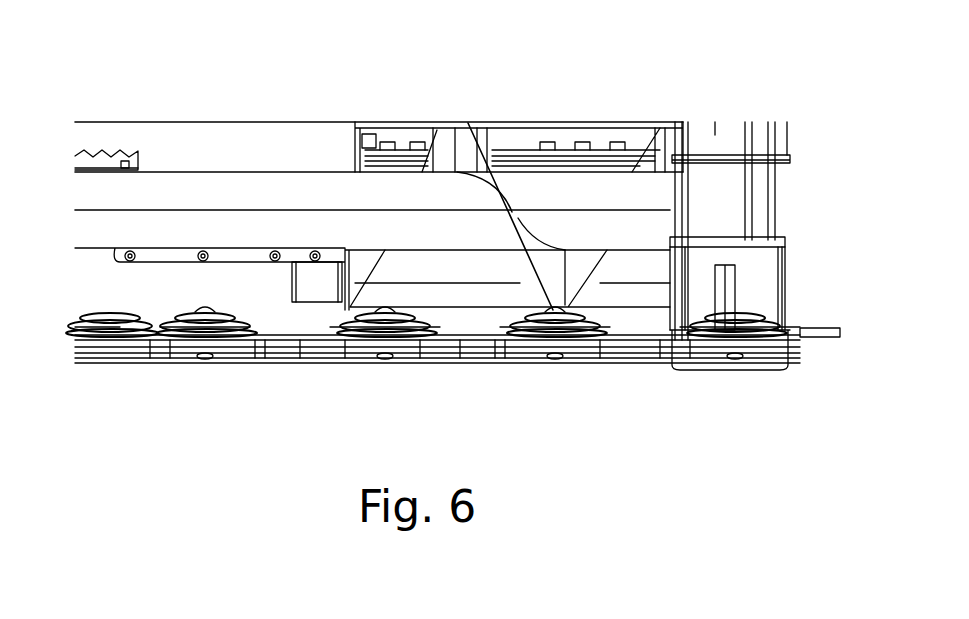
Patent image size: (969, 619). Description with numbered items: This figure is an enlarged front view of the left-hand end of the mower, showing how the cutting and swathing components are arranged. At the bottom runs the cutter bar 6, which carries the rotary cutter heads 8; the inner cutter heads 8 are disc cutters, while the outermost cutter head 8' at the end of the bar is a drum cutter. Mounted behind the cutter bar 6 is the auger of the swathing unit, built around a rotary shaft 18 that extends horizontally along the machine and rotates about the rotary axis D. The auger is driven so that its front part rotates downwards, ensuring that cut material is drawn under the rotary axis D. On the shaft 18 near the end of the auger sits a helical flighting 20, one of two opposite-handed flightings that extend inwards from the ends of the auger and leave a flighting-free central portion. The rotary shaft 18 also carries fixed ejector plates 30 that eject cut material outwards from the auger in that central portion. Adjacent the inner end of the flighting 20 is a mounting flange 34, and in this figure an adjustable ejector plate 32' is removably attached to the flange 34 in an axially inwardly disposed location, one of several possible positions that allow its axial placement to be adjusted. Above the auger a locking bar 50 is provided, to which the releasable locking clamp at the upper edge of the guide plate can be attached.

The cutter bar 6 is at (133, 350).
The rotary cutter heads 8 is at (426, 369).
The outermost cutter heads 8' is at (757, 246).
The rotary shaft 18 is at (190, 182).
The helical flightings 20 is at (447, 128).
The fixed ejector plates 30 is at (105, 154).
The adjustable ejector plates 32' is at (335, 339).
The mounting flanges 34 is at (243, 256).
The locking bar 50 is at (525, 140).
The rotary axis of the auger D is at (291, 212).